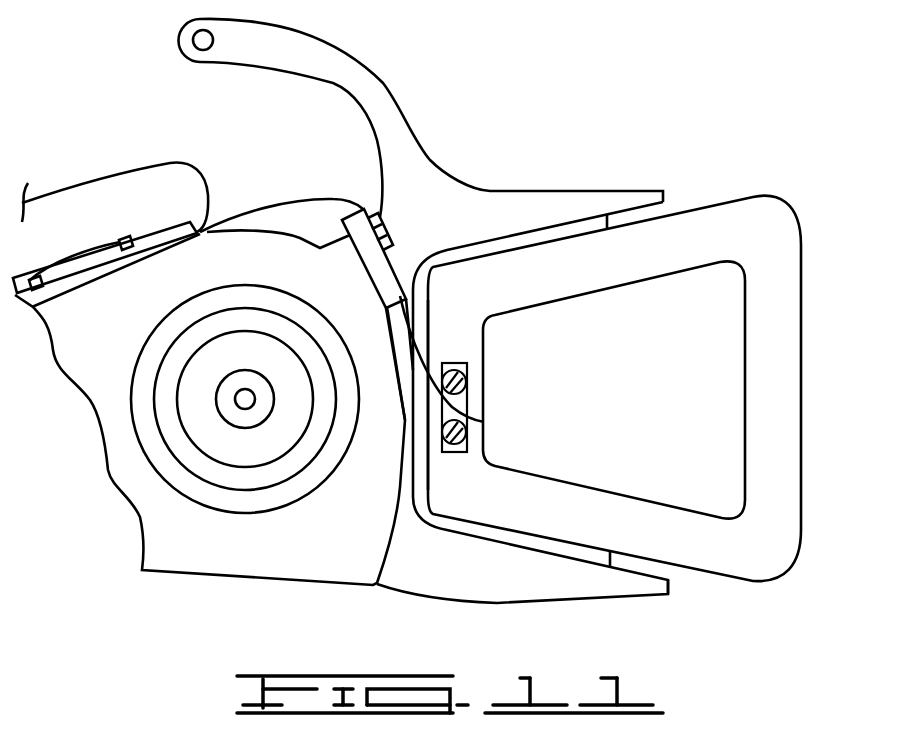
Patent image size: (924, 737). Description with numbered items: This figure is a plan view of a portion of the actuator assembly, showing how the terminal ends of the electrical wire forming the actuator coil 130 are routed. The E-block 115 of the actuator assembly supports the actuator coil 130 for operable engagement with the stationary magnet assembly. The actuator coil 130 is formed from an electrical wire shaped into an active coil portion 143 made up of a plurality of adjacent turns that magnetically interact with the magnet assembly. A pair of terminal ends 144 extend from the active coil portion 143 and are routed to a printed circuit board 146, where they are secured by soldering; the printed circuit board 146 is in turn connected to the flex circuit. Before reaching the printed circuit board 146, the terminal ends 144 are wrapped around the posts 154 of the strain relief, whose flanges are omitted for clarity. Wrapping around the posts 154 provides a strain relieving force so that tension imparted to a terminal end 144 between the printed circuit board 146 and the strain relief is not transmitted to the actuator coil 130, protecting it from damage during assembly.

The E-block 115 is at (215, 548).
The actuator coil 130 is at (646, 372).
The active coil portion 143 is at (753, 217).
The terminal ends 144 is at (428, 330).
The printed circuit board 146 is at (400, 262).
The posts 154 is at (462, 422).